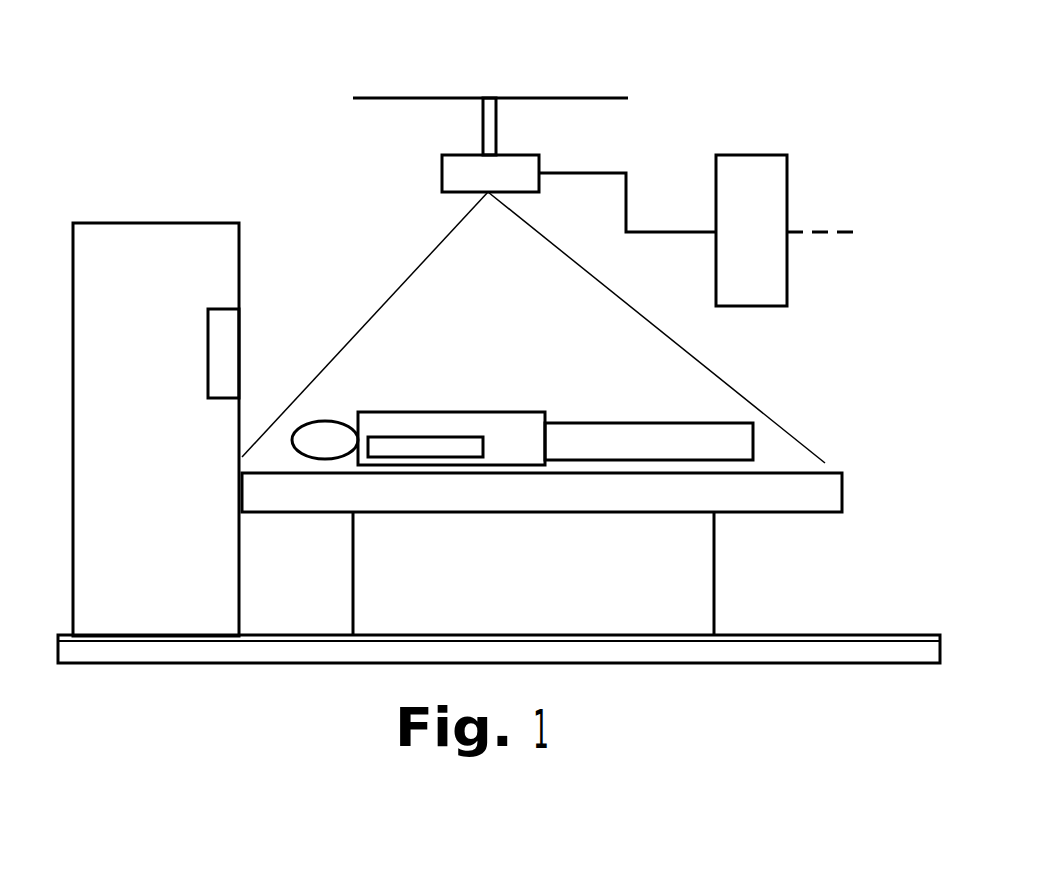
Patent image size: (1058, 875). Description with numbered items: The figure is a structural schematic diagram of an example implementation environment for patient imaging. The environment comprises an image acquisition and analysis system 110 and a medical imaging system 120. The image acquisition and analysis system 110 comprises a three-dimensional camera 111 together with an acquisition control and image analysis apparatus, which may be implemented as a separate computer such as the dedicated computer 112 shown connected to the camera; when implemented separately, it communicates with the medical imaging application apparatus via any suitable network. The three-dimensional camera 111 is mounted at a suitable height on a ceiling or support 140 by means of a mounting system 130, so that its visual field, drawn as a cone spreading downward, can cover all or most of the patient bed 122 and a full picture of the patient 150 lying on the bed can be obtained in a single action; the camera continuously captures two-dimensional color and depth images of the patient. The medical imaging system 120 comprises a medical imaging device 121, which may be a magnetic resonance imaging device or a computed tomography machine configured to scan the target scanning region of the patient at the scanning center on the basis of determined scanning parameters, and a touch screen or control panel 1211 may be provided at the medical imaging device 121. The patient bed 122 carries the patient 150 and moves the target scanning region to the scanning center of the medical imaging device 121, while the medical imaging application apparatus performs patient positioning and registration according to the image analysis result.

The image acquisition and analysis system 110 is at (606, 191).
The 3D camera 111 is at (462, 182).
The dedicated computer 112 is at (768, 217).
The medical imaging system 120 is at (335, 284).
The medical imaging device 121 is at (163, 243).
The touch screen or control panel 1211 is at (227, 383).
The patient bed 122 is at (820, 490).
The mounting system 130 is at (492, 105).
The ceiling 140 is at (548, 98).
The patient 150 is at (458, 423).